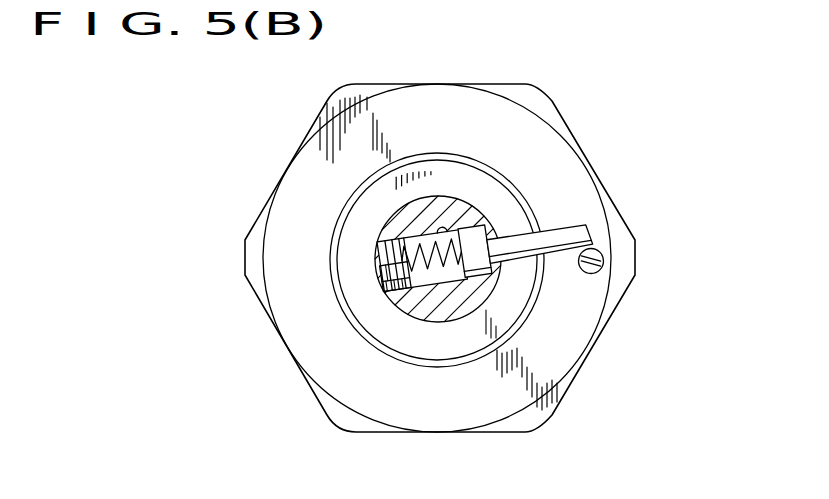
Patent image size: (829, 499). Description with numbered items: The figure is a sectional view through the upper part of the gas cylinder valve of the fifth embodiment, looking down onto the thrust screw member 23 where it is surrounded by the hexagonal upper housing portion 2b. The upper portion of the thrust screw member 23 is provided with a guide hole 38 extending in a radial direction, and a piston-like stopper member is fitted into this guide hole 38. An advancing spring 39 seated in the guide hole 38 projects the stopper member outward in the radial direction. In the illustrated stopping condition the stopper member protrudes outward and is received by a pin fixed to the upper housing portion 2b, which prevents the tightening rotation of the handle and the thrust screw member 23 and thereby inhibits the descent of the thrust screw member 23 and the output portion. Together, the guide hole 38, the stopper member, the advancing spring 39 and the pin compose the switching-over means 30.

The upper housing portion 2b is at (288, 327).
The thrust screw member 23 is at (397, 222).
The switching-over means 30 is at (500, 212).
The guide hole 38 is at (444, 232).
The advancing spring 39 is at (427, 273).